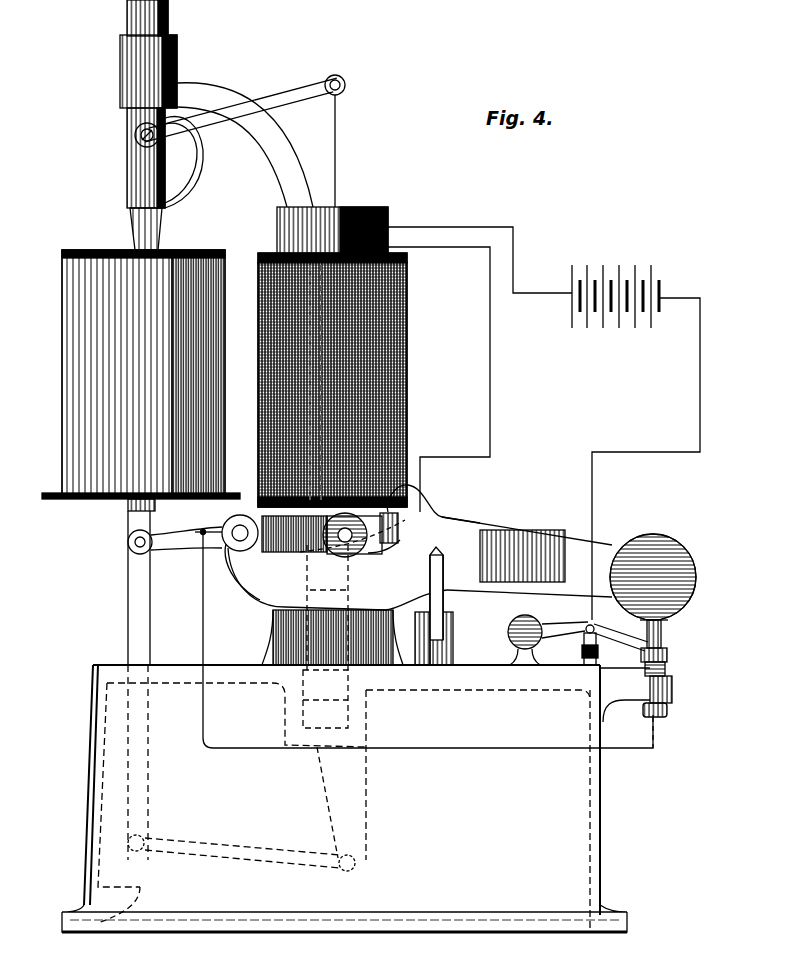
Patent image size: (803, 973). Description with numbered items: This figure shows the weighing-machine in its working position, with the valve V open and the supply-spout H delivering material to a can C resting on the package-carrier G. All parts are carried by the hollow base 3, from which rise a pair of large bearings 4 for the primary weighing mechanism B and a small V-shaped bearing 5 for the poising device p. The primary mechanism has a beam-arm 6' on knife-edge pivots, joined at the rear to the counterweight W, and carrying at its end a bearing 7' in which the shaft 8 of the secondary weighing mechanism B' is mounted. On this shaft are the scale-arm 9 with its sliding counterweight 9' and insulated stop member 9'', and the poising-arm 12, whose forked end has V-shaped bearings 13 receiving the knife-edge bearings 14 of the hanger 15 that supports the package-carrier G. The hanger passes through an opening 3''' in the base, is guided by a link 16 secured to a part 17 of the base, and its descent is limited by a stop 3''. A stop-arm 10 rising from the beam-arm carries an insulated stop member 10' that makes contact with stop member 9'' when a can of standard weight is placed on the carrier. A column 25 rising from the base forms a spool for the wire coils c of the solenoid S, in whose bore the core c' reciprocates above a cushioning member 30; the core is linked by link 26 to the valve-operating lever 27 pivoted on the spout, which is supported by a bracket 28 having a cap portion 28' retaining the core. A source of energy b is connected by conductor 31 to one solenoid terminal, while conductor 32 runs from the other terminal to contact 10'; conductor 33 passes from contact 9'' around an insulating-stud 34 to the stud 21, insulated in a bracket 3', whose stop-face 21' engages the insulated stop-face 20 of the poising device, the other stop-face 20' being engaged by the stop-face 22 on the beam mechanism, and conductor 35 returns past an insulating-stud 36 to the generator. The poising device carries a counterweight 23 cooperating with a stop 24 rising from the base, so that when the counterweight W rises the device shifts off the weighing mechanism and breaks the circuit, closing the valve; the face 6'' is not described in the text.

The bracket 28 is at (245, 133).
The valve-operating lever 27 is at (280, 95).
The supply-spout H is at (133, 126).
The valve V is at (200, 180).
The link 26 is at (337, 146).
The cap portion 28' is at (332, 220).
The can C is at (143, 372).
The package-carrier G is at (133, 493).
The solenoid S is at (409, 296).
The wire coils c is at (276, 382).
The core c' is at (280, 382).
The conductor 31 is at (514, 268).
The source of energy b is at (615, 284).
The conductor 35 is at (632, 452).
The conductor 32 is at (489, 352).
The hanger 15 is at (126, 518).
The knife-edge bearings 14 is at (128, 545).
The V-shaped bearings 13 is at (134, 547).
The poising-arm 12 is at (191, 551).
The secondary weighing mechanism B' is at (193, 517).
The insulating-stud 34 is at (203, 529).
The shaft 8 is at (240, 525).
The bearing 7' is at (242, 572).
The column 25 is at (265, 643).
The scale-arm 9 is at (294, 553).
The counterweight 9' is at (349, 551).
The stop member 9'' is at (371, 536).
The arm end 6'' is at (391, 561).
The stop member 10' is at (398, 513).
The stop-arm 10 is at (425, 489).
The primary weighing mechanism B is at (527, 554).
The beam-arm 6' is at (466, 516).
The bearings 4 is at (445, 630).
The counterweight 23 is at (527, 614).
The stop 24 is at (520, 666).
The poising device p is at (565, 620).
The insulating-stud 36 is at (592, 623).
The bearing 5 is at (597, 650).
The counterweight W is at (653, 577).
The stop-face 22 is at (645, 618).
The stop-face 20' is at (676, 632).
The stop-face 20 is at (670, 648).
The stop-face 21' is at (678, 663).
The stud 21 is at (674, 709).
The bracket 3' is at (625, 695).
The conductor 33 is at (202, 608).
The base 3 is at (344, 798).
The opening 3''' is at (164, 655).
The stop 3'' is at (134, 891).
The cushioning member 30 is at (349, 710).
The part of base 17 is at (360, 803).
The link 16 is at (237, 852).